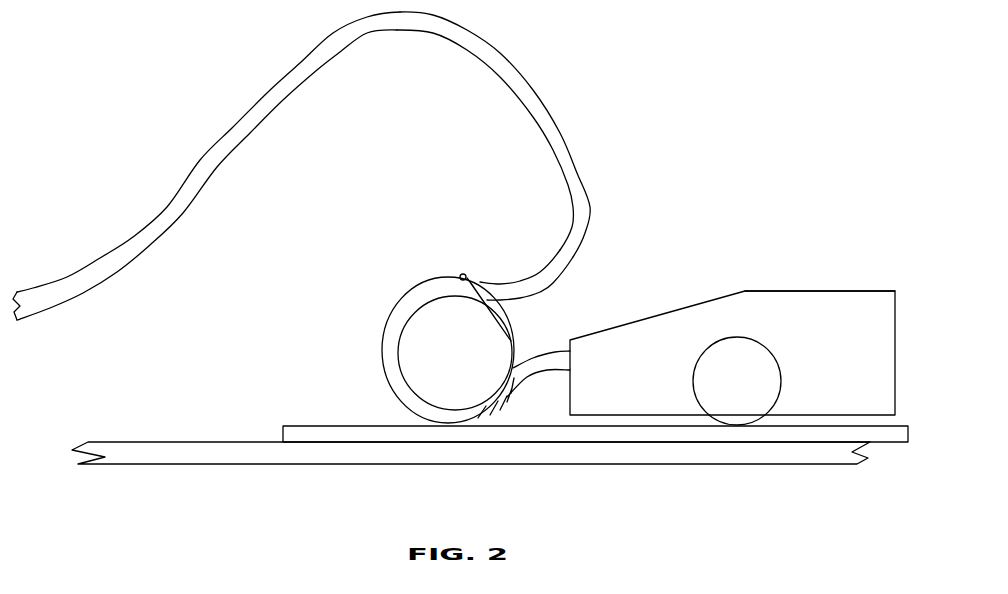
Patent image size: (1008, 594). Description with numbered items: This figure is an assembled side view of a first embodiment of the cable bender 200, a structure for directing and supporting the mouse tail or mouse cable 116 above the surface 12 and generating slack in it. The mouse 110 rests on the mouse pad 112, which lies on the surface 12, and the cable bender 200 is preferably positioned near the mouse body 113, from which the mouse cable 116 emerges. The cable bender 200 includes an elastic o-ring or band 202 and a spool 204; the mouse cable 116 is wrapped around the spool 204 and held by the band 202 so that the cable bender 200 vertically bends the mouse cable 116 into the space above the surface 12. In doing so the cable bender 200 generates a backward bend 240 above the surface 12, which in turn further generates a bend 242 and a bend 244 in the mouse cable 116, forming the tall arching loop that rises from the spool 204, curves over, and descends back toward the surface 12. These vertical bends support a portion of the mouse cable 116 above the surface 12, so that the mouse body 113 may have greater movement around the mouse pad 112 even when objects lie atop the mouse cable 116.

The surface 12 is at (118, 442).
The mouse pad 112 is at (283, 428).
The mouse 110 is at (783, 292).
The mouse body 113 is at (838, 291).
The mouse cable 116 is at (573, 257).
The cable bender 200 is at (512, 341).
The elastic o-ring or band 202 is at (467, 276).
The spool 204 is at (438, 365).
The backward bend 240 is at (393, 345).
The bend 242 is at (577, 177).
The bend 244 is at (68, 278).